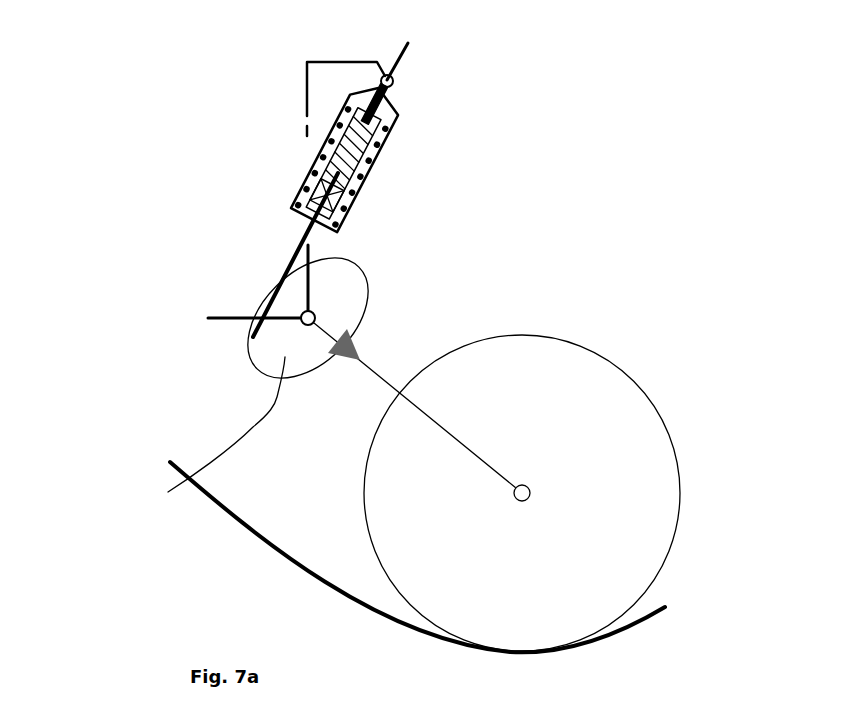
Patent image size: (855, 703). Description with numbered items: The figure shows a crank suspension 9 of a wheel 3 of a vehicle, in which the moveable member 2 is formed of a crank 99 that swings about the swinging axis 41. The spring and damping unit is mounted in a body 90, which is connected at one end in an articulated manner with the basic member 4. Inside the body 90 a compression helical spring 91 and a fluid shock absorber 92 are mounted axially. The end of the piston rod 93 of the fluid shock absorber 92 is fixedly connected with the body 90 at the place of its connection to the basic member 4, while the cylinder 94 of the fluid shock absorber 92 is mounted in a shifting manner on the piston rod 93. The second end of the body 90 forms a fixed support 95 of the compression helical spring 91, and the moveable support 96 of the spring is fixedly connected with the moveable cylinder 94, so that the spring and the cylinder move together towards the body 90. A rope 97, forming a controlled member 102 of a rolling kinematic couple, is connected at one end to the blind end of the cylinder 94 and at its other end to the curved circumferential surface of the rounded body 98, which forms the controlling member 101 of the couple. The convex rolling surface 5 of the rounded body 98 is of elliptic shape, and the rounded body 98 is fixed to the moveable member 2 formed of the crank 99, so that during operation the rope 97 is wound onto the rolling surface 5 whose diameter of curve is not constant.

The crank suspension 9 is at (270, 131).
The moveable support 96 is at (360, 93).
The piston rod 93 is at (382, 111).
The cylinder 94 is at (378, 158).
The compression helical spring 91 is at (373, 178).
The body 90 is at (357, 214).
The fluid shock absorber 92 is at (300, 184).
The fixed support 95 is at (293, 215).
The rope 97 is at (290, 253).
The controlled member 102 is at (295, 255).
The basic member 4 is at (237, 322).
The convex rolling surface 5 is at (262, 375).
The crank 99 is at (386, 384).
The moveable member 2 is at (415, 405).
The wheel 3 is at (586, 434).
The swinging axis 41 is at (308, 326).
The rounded body 98 is at (189, 435).
The controlling member 101 is at (226, 424).